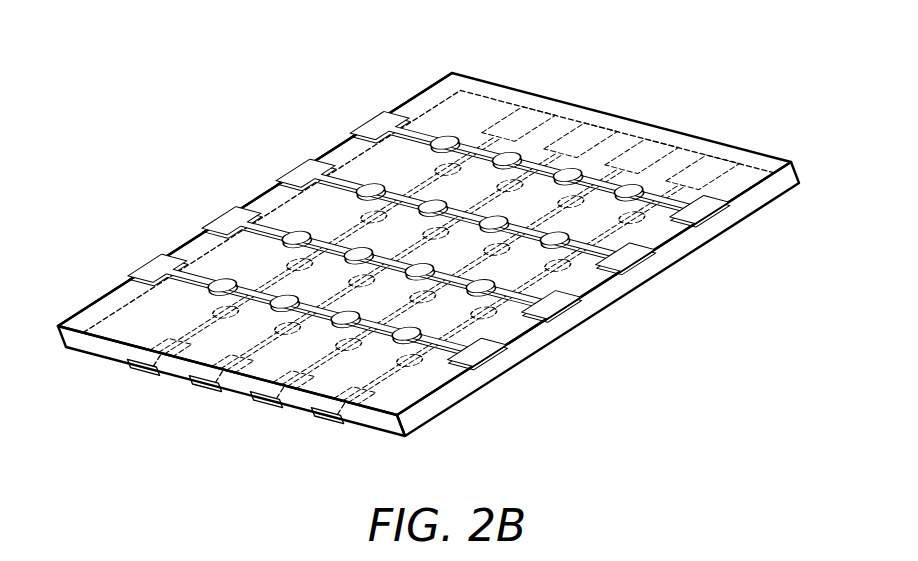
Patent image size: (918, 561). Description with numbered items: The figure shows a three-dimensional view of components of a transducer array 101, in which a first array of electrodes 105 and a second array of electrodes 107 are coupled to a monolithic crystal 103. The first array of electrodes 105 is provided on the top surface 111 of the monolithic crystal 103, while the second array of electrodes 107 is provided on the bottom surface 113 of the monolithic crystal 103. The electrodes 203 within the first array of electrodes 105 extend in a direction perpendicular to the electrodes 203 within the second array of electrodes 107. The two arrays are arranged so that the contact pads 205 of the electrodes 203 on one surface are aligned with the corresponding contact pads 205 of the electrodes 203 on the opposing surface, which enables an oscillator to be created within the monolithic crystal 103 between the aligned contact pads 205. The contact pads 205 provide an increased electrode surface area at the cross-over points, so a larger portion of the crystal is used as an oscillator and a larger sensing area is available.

The transducer array 101 is at (573, 112).
The monolithic crystal 103 is at (797, 176).
The first array of electrodes 105 is at (695, 212).
The second array of electrodes 107 is at (332, 428).
The top surface 111 is at (86, 316).
The bottom surface 113 is at (102, 356).
The electrodes 203 is at (418, 133).
The contact pads 205 is at (443, 138).